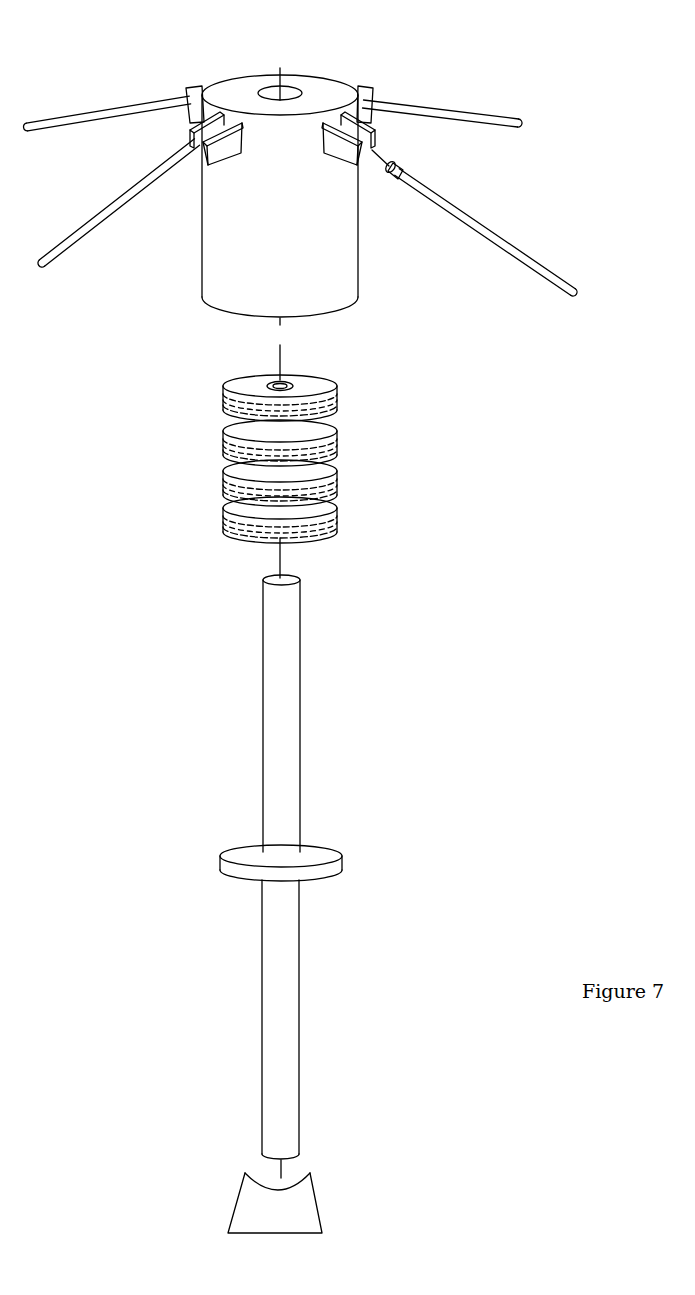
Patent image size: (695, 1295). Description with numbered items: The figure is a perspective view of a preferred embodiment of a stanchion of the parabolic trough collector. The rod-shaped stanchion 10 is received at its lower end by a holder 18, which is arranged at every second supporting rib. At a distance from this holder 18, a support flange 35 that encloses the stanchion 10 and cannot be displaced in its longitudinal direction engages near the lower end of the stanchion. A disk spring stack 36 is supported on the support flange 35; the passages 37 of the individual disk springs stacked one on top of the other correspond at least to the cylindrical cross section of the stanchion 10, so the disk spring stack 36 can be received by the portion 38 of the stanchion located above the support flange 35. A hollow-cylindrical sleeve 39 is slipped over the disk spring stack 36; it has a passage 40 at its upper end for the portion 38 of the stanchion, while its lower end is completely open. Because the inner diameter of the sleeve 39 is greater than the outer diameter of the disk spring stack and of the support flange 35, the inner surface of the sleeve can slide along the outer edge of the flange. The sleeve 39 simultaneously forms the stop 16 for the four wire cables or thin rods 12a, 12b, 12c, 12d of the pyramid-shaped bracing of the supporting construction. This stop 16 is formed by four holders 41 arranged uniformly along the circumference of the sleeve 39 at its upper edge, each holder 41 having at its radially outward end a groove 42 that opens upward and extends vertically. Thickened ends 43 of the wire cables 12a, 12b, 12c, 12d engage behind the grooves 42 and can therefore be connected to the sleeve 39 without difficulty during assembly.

The rod-shaped stanchion 10 is at (418, 875).
The stop 16 is at (192, 55).
The wire cable 12a is at (100, 123).
The wire cable 12b is at (448, 112).
The wire cable 12c is at (444, 204).
The wire cable 12d is at (100, 222).
The holder 18 is at (310, 1173).
The support flange 35 is at (222, 878).
The disk spring stack 36 is at (362, 453).
The passage 37 is at (292, 378).
The portion of the stanchion 38 is at (283, 667).
The hollow-cylindrical sleeve 39 is at (220, 300).
The passage 40 is at (300, 97).
The holder 41 is at (250, 150).
The groove 42 is at (370, 165).
The thickened end 43 is at (405, 165).